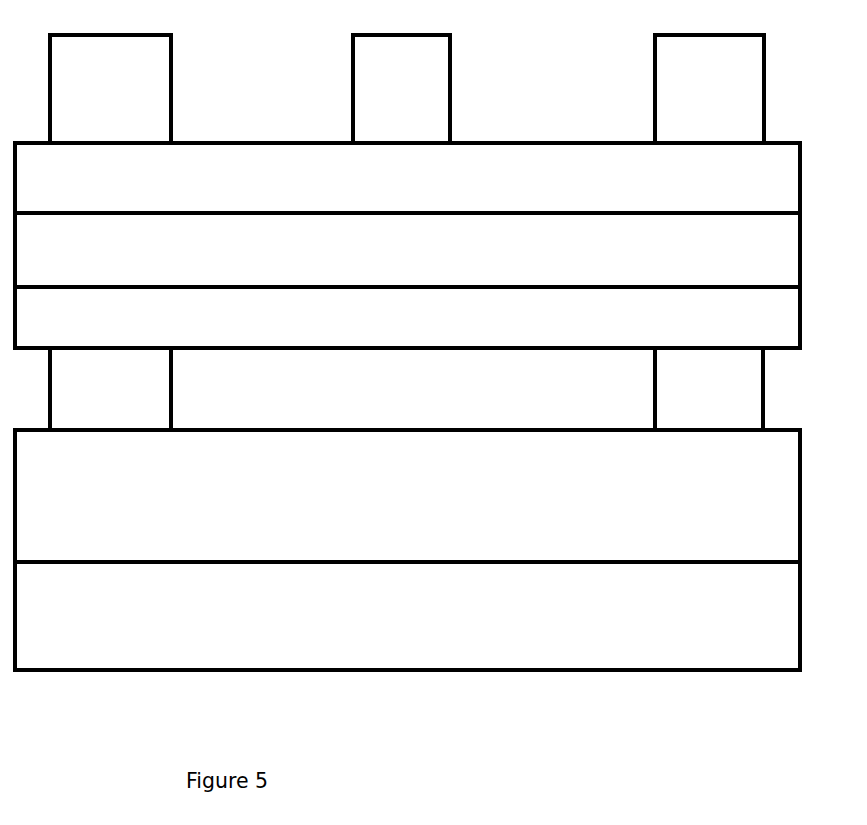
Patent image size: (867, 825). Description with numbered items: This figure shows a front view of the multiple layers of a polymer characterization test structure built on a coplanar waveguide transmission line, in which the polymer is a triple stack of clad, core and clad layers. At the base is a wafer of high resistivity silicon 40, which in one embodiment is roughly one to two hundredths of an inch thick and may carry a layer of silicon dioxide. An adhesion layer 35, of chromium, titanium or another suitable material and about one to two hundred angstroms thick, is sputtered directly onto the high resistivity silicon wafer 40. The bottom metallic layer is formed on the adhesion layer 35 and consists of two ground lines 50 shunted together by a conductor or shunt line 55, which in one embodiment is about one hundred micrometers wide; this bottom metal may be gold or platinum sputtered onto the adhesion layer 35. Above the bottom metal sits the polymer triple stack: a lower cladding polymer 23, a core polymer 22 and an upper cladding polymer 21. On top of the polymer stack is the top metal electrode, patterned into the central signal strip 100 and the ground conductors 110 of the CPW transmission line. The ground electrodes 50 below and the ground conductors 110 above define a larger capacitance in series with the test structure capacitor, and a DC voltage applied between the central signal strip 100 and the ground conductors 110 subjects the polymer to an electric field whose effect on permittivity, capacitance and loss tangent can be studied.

The ground conductors 110 is at (124, 83).
The central signal strip 100 is at (416, 102).
The cladding polymer 21 is at (562, 192).
The core polymer 22 is at (520, 269).
The cladding polymer 23 is at (572, 342).
The ground lines 50 is at (113, 401).
The shunt line 55 is at (440, 401).
The adhesion layer 35 is at (244, 514).
The high resistivity silicon wafer 40 is at (378, 657).